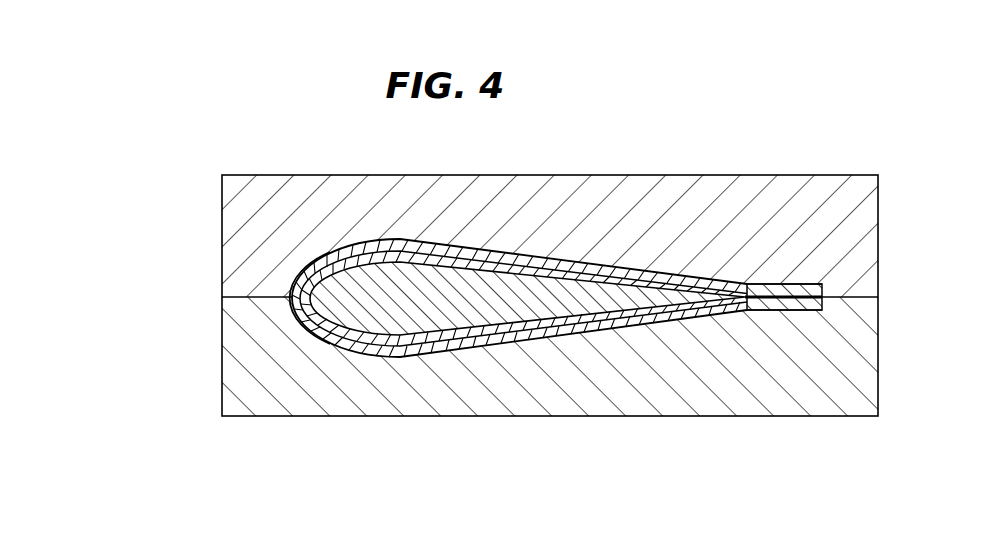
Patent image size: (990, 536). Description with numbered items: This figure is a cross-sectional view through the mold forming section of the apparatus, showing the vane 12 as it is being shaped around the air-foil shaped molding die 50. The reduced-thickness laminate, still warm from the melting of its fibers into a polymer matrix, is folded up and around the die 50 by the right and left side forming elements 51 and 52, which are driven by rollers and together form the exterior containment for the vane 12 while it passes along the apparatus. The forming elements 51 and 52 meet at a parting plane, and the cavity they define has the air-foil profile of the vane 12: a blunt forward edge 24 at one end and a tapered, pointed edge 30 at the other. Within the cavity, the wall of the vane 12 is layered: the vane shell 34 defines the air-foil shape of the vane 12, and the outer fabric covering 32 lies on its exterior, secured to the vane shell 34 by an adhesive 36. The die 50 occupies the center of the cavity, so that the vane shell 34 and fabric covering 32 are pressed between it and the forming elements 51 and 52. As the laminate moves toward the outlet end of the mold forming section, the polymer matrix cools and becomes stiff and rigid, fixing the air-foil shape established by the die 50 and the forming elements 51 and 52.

The vane 12 is at (362, 356).
The blunt forward edge 24 is at (297, 313).
The tapered, pointed edge 30 is at (825, 287).
The outer fabric covering 32 is at (752, 284).
The vane shell 34 is at (572, 272).
The adhesive 36 is at (813, 312).
The air-foil shaped molding die 50 is at (445, 308).
The right side forming element 51 is at (821, 409).
The left side forming element 52 is at (826, 186).